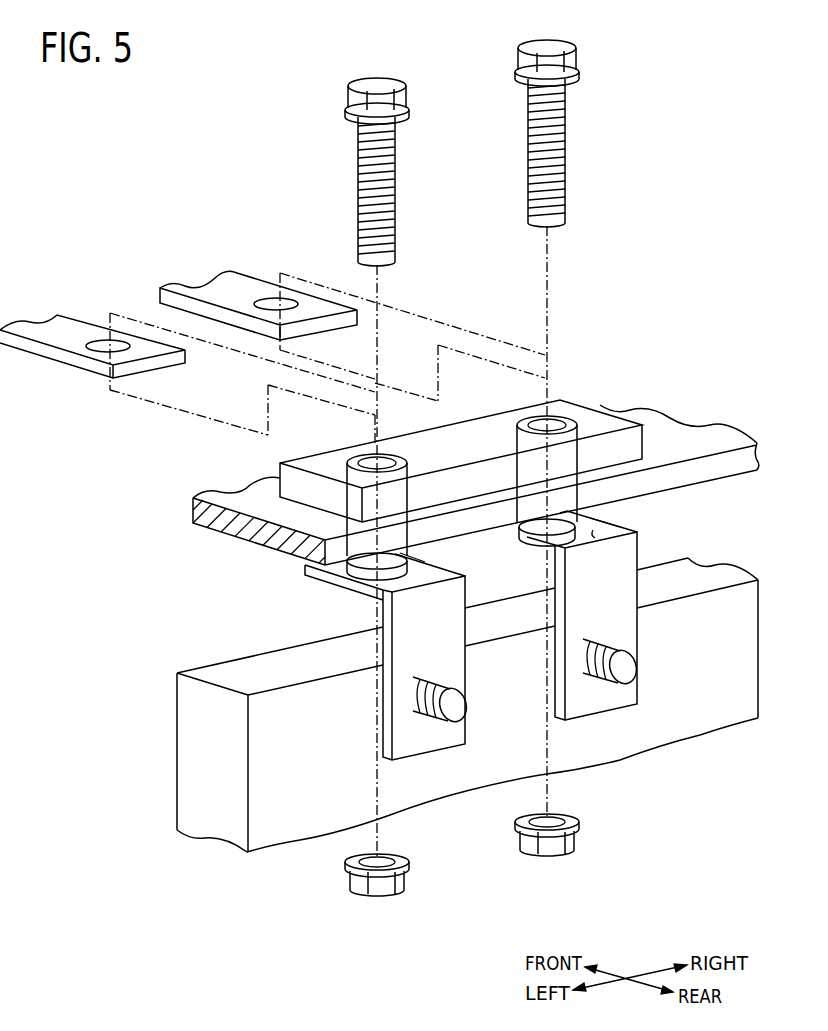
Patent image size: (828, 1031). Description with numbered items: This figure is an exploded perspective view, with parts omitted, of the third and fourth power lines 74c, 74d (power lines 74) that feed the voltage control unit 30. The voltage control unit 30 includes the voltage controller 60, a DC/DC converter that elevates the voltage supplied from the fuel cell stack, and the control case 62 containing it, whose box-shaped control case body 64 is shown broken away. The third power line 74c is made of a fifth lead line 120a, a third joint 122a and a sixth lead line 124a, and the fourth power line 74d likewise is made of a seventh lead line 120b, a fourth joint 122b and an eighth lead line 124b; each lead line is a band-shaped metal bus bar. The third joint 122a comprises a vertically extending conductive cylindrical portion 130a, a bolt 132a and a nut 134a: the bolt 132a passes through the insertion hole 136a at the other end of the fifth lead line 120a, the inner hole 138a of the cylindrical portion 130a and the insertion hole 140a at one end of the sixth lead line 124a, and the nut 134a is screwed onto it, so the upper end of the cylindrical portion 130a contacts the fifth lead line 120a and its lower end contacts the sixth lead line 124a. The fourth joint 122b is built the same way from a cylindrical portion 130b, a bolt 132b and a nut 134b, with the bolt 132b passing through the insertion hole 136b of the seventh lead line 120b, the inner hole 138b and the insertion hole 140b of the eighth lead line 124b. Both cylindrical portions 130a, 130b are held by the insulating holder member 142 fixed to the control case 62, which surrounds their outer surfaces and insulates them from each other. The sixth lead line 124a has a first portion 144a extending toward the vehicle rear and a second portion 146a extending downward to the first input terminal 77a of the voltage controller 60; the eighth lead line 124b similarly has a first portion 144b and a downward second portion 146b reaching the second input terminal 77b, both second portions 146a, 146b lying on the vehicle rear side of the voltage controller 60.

The voltage control unit 30 is at (464, 730).
The voltage controller 60 is at (705, 572).
The control case 62 is at (476, 445).
The control case body 64 is at (700, 438).
The power line 74 is at (178, 316).
The third power line 74c is at (92, 336).
The fourth power line 74d is at (245, 262).
The first input terminal 77a is at (453, 722).
The second input terminal 77b is at (623, 684).
The fifth lead line 120a is at (92, 381).
The seventh lead line 120b is at (245, 277).
The third joint 122a is at (363, 162).
The fourth joint 122b is at (535, 122).
The sixth lead line 124a is at (383, 669).
The eighth lead line 124b is at (638, 630).
The cylindrical portion 130a is at (405, 551).
The cylindrical portion 130b is at (596, 515).
The bolt 132a is at (345, 93).
The bolt 132b is at (578, 66).
The nut 134a is at (362, 893).
The nut 134b is at (533, 850).
The insertion hole 136a is at (100, 352).
The insertion hole 136b is at (270, 300).
The inner hole 138a is at (355, 455).
The inner hole 138b is at (562, 417).
The insertion hole 140a is at (388, 582).
The insertion hole 140b is at (568, 546).
The holder member 142 is at (470, 440).
The first portion 144a is at (347, 580).
The first portion 144b is at (637, 540).
The second portion 146a is at (403, 735).
The second portion 146b is at (627, 636).